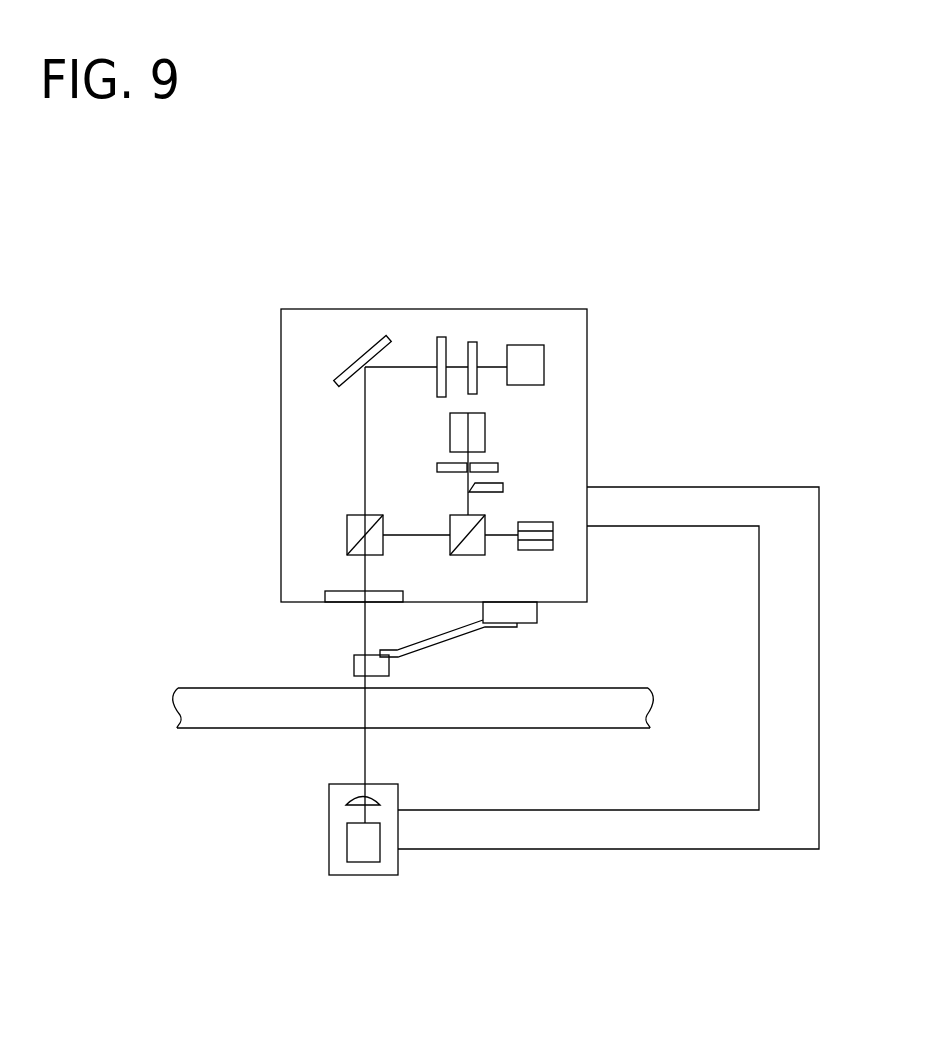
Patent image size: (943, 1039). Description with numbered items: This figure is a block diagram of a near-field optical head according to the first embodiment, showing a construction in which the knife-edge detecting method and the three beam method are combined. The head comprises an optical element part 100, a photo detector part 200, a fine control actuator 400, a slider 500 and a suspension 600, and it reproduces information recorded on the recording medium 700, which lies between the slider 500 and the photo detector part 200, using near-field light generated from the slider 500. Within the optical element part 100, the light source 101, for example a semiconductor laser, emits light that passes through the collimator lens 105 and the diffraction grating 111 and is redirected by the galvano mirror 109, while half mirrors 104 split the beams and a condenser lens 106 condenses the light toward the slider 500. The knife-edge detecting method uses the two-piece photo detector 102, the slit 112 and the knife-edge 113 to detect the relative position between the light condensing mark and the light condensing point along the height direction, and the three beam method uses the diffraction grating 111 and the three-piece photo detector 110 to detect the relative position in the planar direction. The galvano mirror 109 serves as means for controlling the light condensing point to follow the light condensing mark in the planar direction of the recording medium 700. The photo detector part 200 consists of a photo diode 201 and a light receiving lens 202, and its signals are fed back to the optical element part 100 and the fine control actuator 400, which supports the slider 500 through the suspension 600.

The optical element part 100 is at (280, 369).
The light source 101 is at (528, 345).
The two-piece photo detector 102 is at (486, 437).
The half mirror 104 is at (347, 530).
The collimator lens 105 is at (473, 342).
The condenser lens 106 is at (325, 591).
The galvano mirror 109 is at (336, 383).
The three-piece photo detector 110 is at (553, 522).
The diffraction grating 111 is at (439, 337).
The slit 112 is at (498, 465).
The knife-edge 113 is at (504, 483).
The photo detector part 200 is at (397, 877).
The photo diode 201 is at (347, 848).
The light receiving lens 202 is at (352, 797).
The fine control actuator 400 is at (520, 610).
The slider 500 is at (358, 665).
The suspension 600 is at (447, 642).
The recording medium 700 is at (217, 713).